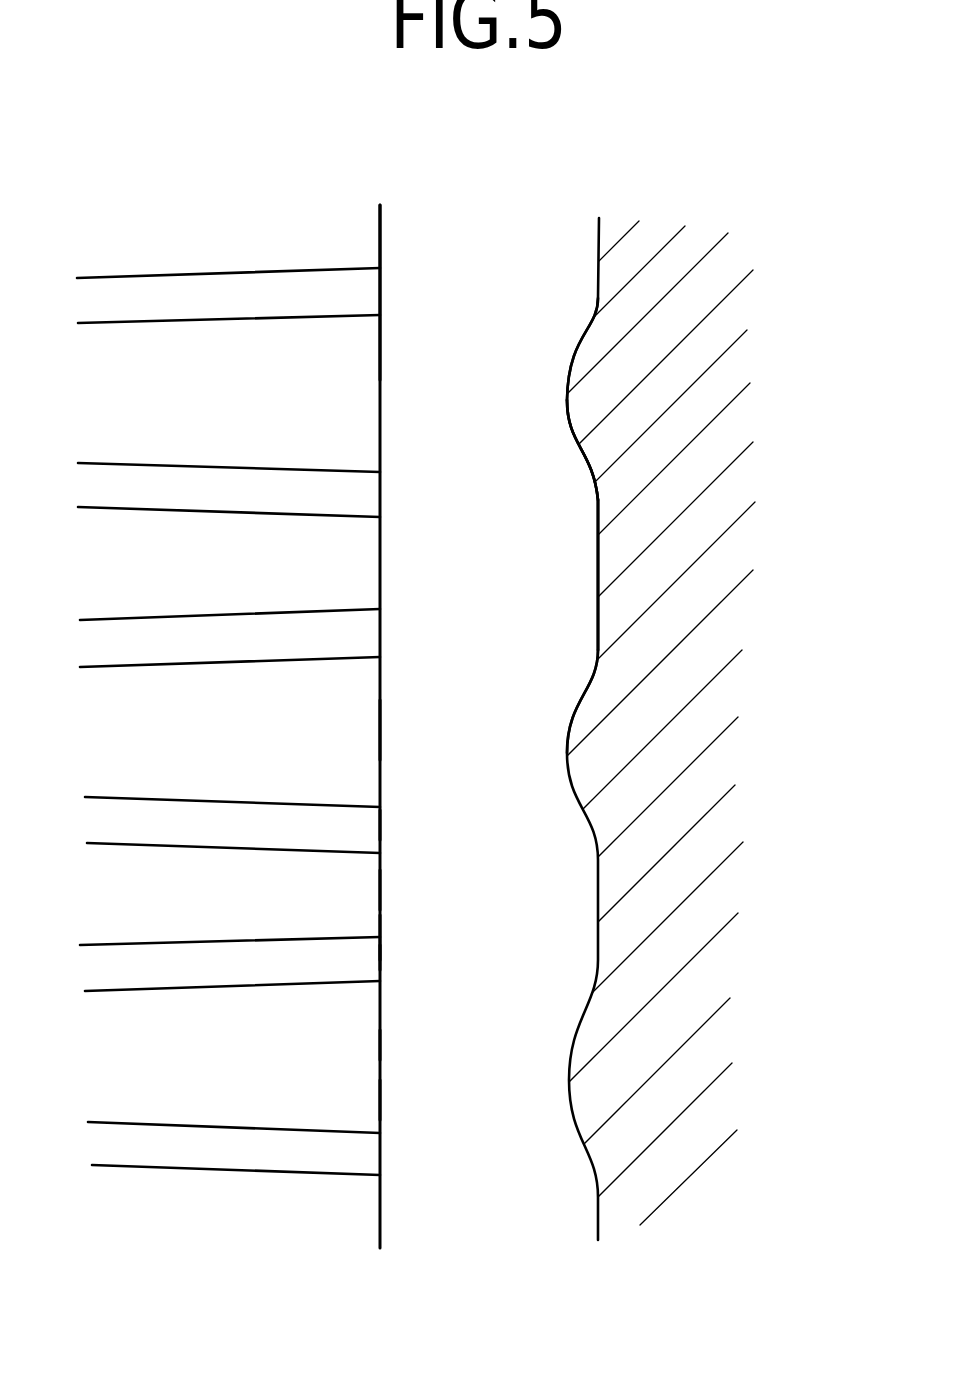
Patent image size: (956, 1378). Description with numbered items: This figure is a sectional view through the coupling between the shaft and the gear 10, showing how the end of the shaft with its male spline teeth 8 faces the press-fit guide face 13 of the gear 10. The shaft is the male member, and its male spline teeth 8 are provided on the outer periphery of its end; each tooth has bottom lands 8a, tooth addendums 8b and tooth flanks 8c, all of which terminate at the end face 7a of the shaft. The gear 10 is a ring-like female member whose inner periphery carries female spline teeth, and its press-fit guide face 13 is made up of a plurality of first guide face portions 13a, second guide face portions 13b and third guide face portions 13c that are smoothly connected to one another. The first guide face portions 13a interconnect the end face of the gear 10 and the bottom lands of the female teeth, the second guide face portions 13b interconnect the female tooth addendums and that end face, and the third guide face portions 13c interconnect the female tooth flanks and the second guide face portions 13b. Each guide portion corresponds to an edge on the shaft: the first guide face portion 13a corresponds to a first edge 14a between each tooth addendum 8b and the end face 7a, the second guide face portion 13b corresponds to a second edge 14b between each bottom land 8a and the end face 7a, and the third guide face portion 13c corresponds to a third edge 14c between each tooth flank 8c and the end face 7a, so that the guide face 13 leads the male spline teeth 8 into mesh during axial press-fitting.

The end face of the shaft 7a is at (380, 378).
The male spline teeth 8 is at (405, 1192).
The bottom lands of the male spline teeth 8a is at (353, 1086).
The tooth addendums of the male spline teeth 8b is at (360, 921).
The tooth flanks of the male spline teeth 8c is at (167, 829).
The gear 10 is at (683, 782).
The press-fit guide face 13 is at (556, 581).
The first guide face portions 13a is at (598, 630).
The second guide face portions 13b is at (526, 354).
The third guide face portions 13c is at (585, 462).
The first edge 14a is at (380, 890).
The second edge 14b is at (380, 727).
The third edge 14c is at (380, 825).